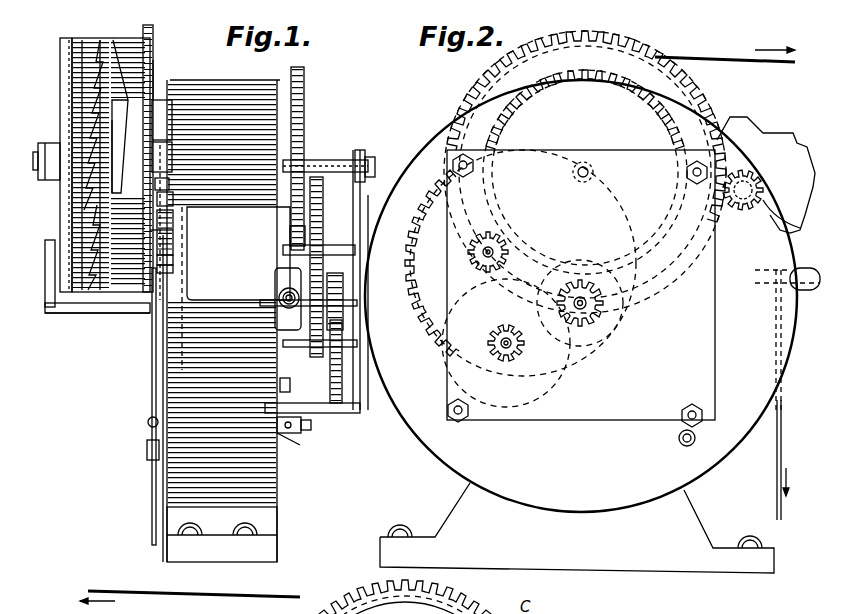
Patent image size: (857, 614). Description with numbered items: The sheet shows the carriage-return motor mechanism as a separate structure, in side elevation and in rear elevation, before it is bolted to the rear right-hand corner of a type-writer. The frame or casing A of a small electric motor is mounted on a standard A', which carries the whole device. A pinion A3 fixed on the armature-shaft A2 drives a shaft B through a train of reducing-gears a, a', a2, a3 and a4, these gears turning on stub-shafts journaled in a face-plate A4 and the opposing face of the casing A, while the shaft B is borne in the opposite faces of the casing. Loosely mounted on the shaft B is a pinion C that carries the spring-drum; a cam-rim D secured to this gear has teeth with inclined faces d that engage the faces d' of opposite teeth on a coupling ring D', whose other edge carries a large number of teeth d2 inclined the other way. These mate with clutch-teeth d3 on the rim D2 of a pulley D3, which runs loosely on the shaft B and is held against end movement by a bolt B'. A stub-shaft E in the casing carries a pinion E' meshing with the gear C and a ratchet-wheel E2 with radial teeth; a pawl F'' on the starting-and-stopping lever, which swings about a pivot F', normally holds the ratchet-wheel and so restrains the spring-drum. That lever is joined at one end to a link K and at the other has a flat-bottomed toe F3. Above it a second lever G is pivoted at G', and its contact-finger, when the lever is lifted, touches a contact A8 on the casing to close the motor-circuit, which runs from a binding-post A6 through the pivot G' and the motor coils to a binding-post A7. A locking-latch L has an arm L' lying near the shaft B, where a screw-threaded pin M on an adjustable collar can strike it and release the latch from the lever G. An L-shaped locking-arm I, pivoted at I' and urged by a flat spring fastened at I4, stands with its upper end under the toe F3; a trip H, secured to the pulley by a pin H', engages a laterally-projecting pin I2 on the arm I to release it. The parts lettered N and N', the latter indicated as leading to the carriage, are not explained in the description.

In FIG. 1, the motor frame A is at (228, 321).
In FIG. 2, the motor frame A is at (581, 296).
In FIG. 1, the standard A' is at (222, 545).
In FIG. 2, the standard A' is at (577, 528).
In FIG. 1, the armature-shaft A2 is at (328, 275).
In FIG. 2, the armature-shaft A2 is at (588, 310).
In FIG. 1, the pinion A3 is at (344, 314).
In FIG. 2, the pinion A3 is at (585, 322).
In FIG. 1, the face-plate A4 is at (357, 185).
In FIG. 2, the face-plate A4 is at (690, 395).
In FIG. 1, the binding-post A6 is at (306, 428).
In FIG. 1, the binding-post A7 is at (300, 445).
In FIG. 1, the contact A8 is at (173, 199).
In FIG. 1, the shaft B is at (325, 151).
In FIG. 2, the shaft B is at (588, 155).
In FIG. 1, the bolt B' is at (38, 176).
In FIG. 1, the pinion C is at (153, 44).
In FIG. 2, the pinion C is at (585, 161).
In FIG. 1, the cam-rim D is at (111, 147).
In FIG. 1, the clutch ring D' is at (107, 146).
In FIG. 1, the pulley rim D2 is at (82, 38).
In FIG. 1, the pulley D3 is at (48, 165).
In FIG. 1, the inclined tooth faces d is at (121, 116).
In FIG. 1, the tooth faces d' is at (101, 156).
In FIG. 1, the teeth d2 is at (84, 110).
In FIG. 1, the clutch-teeth d3 is at (86, 70).
In FIG. 2, the stub-shaft E is at (743, 205).
In FIG. 2, the pinion E' is at (784, 193).
In FIG. 1, the ratchet-wheel E2 is at (149, 66).
In FIG. 2, the ratchet-wheel E2 is at (770, 140).
In FIG. 2, the pivot F' is at (787, 339).
In FIG. 1, the toe F3 is at (165, 246).
In FIG. 1, the pawl F'' is at (183, 271).
In FIG. 1, the lever G is at (190, 232).
In FIG. 1, the pivot G' is at (186, 238).
In FIG. 1, the trip H is at (81, 301).
In FIG. 1, the pin H' is at (33, 273).
In FIG. 1, the locking-arm I is at (135, 398).
In FIG. 1, the pivot I' is at (133, 427).
In FIG. 1, the pin I2 is at (104, 306).
In FIG. 1, the spring fastening I4 is at (147, 448).
In FIG. 1, the link K is at (152, 490).
In FIG. 2, the link K is at (781, 452).
In FIG. 1, the locking-latch L is at (183, 181).
In FIG. 1, the latch arm L' is at (182, 187).
In FIG. 1, the screw-threaded pin M is at (158, 100).
In FIG. 2, the bar N is at (725, 49).
In FIG. 1, the bar to carriage N' is at (190, 602).
In FIG. 1, the reducing-gear a is at (351, 361).
In FIG. 2, the reducing-gear a is at (515, 343).
In FIG. 1, the reducing-gear a' is at (289, 367).
In FIG. 2, the reducing-gear a' is at (506, 357).
In FIG. 1, the reducing-gear a2 is at (306, 234).
In FIG. 2, the reducing-gear a2 is at (420, 296).
In FIG. 1, the reducing-gear a3 is at (322, 219).
In FIG. 2, the reducing-gear a3 is at (482, 246).
In FIG. 1, the reducing-gear a4 is at (306, 112).
In FIG. 2, the reducing-gear a4 is at (505, 106).